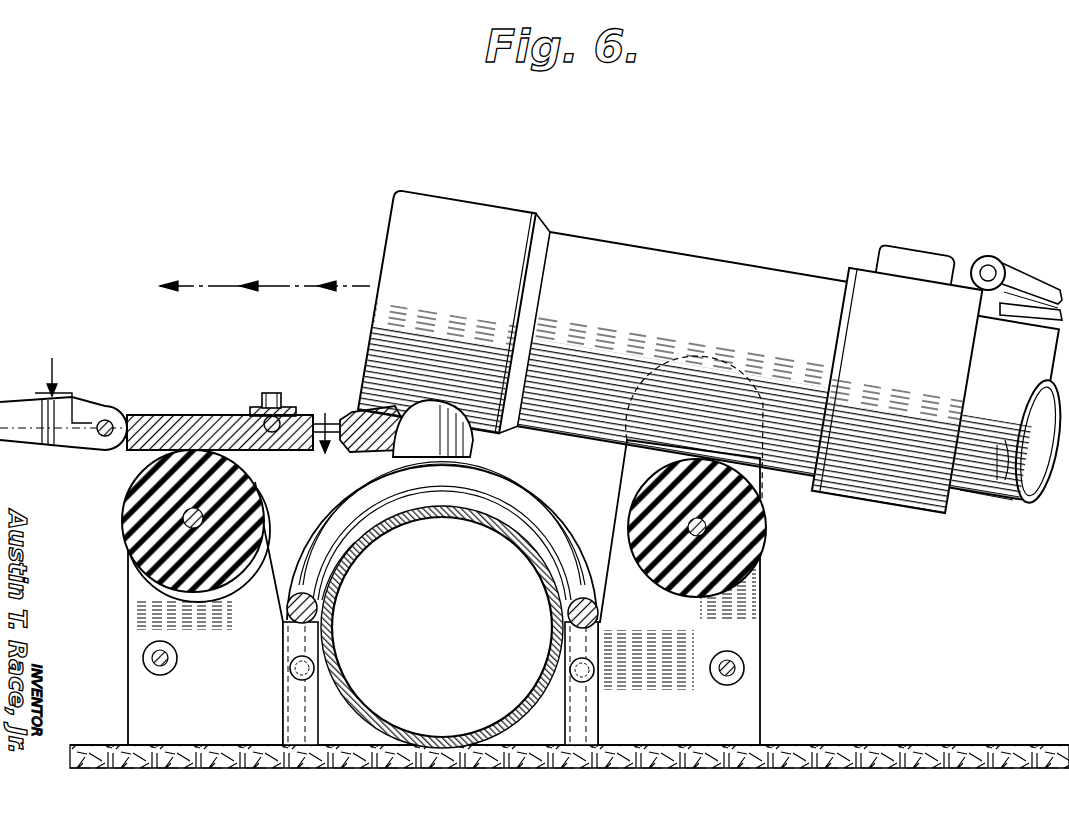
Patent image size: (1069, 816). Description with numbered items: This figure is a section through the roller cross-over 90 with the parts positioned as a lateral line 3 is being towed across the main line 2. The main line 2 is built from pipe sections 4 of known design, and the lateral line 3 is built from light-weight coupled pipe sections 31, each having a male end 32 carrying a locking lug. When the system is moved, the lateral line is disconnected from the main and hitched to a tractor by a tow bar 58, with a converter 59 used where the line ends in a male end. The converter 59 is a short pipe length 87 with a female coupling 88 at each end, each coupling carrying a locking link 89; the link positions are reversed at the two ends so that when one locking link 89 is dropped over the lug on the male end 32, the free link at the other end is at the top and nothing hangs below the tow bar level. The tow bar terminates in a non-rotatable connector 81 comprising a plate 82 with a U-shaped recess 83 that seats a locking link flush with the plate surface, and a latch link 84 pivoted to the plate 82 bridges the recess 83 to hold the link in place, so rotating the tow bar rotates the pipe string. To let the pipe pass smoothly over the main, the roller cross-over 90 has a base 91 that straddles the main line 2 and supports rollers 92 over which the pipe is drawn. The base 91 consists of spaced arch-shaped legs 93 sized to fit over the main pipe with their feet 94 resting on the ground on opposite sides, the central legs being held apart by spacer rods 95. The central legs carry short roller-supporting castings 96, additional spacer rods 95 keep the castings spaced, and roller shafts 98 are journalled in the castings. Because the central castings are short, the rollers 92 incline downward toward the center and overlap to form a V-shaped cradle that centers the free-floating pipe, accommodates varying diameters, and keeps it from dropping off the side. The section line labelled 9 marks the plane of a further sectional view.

The main line 2 is at (531, 530).
The lateral line 3 is at (996, 482).
The pipe section 4 is at (353, 540).
The section line 9- 9 is at (186, 416).
The pipe section 31 is at (1005, 482).
The male end 32 is at (967, 486).
The tow bar 58 is at (26, 432).
The converter 59 is at (727, 258).
The connector 81 is at (166, 414).
The plate 82 is at (268, 450).
The recess 83 is at (252, 418).
The latch link 84 is at (284, 405).
The pipe length 87 is at (612, 248).
The female coupling 88 is at (474, 212).
The locking link 89 is at (1012, 270).
The roller cross-over 90 is at (760, 612).
The base 91 is at (498, 488).
The roller 92 is at (124, 530).
The arch-shaped leg 93 is at (575, 558).
The foot 94 is at (282, 623).
The spacer rod 95 is at (318, 608).
The roller-supporting casting 96 is at (130, 716).
The roller shaft 98 is at (195, 509).